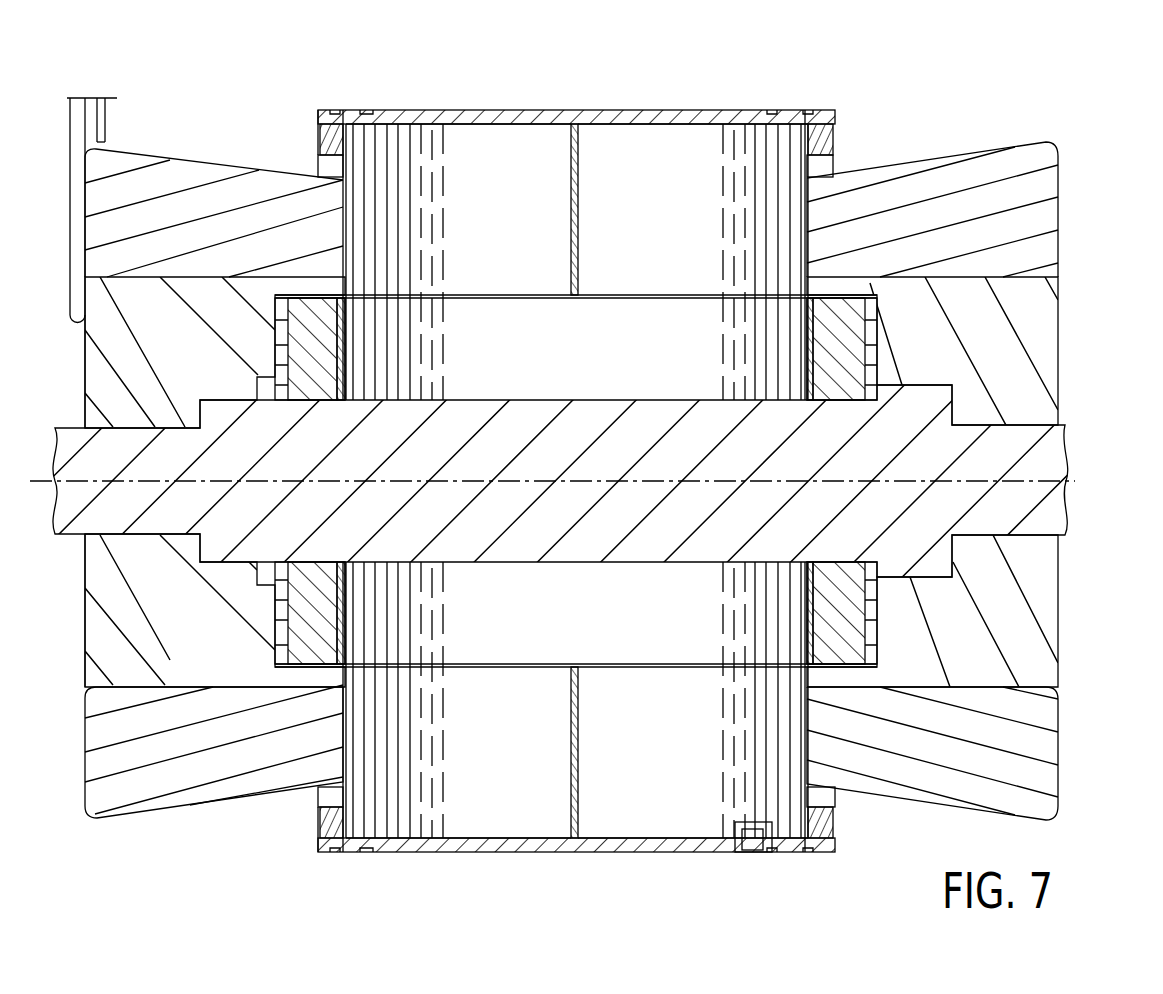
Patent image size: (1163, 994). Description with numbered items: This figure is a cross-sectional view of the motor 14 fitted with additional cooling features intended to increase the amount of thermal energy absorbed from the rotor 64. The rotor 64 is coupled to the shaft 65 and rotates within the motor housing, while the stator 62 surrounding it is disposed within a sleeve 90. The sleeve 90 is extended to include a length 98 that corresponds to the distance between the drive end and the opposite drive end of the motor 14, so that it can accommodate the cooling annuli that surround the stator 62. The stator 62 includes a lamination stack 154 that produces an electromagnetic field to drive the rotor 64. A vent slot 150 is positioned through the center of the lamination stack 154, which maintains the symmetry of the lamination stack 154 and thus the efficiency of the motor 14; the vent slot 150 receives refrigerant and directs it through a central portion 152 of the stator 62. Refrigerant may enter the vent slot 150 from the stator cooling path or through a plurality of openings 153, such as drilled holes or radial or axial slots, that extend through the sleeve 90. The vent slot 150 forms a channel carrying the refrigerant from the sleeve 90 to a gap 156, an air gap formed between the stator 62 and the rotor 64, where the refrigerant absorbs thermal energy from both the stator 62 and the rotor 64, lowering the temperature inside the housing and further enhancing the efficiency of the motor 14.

The motor 14 is at (148, 82).
The stator 62 is at (763, 210).
The rotor 64 is at (765, 343).
The shaft 65 is at (1018, 443).
The sleeve 90 is at (673, 110).
The length 98 is at (834, 98).
The vent slot 150 is at (581, 155).
The central portion 152 is at (553, 160).
The openings 153 is at (590, 110).
The lamination stack 154 is at (386, 159).
The gap 156 is at (331, 292).